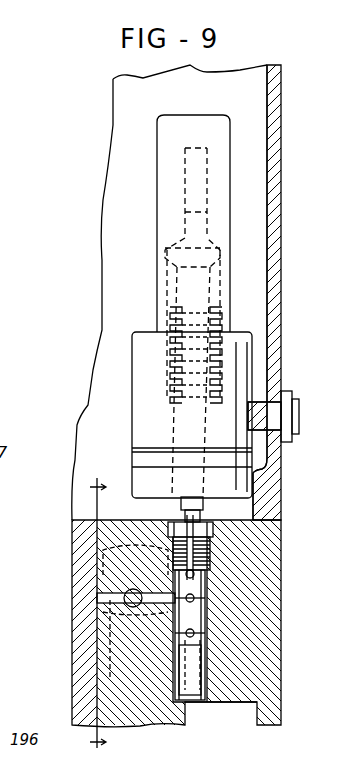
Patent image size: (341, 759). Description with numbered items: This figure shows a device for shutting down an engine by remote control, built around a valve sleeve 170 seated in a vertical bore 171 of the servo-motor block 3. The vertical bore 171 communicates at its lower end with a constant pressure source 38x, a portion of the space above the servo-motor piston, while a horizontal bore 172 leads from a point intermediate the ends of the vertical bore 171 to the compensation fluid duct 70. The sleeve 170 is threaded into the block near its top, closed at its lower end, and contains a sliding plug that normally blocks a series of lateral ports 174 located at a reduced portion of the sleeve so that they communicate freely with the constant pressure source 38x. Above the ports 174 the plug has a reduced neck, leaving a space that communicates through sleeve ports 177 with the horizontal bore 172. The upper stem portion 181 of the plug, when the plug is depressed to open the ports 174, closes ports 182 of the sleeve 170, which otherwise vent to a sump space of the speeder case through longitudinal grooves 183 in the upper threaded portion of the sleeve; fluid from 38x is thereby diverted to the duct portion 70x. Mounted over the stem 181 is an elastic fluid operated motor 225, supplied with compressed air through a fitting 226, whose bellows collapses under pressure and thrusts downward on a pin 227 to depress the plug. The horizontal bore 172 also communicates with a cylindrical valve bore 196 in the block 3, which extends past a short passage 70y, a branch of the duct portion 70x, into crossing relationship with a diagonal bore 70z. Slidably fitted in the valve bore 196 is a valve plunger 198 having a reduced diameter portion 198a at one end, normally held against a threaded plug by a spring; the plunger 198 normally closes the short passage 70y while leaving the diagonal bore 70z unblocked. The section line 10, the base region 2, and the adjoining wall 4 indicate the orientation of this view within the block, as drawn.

The base 2 is at (72, 650).
The servo-motor block 3 is at (72, 554).
The wall 4 is at (271, 229).
The section line 10 is at (109, 615).
The constant pressure source 38x is at (228, 714).
The compensation fluid duct 70 is at (72, 690).
The compensation fluid duct portion 70x is at (97, 604).
The short passage 70y is at (110, 580).
The diagonal bore 70z is at (72, 566).
The valve sleeve 170 is at (207, 648).
The vertical bore 171 is at (175, 676).
The horizontal bore 172 is at (152, 645).
The lateral ports 174 is at (207, 632).
The sleeve ports 177 is at (207, 596).
The stem portion 181 is at (160, 503).
The ports 182 is at (207, 574).
The longitudinal grooves 183 is at (210, 543).
The cylindrical valve bore 196 is at (138, 607).
The valve plunger 198 is at (72, 535).
The reduced diameter portion 198a is at (72, 620).
The elastic fluid operated motor 225 is at (140, 395).
The fitting 226 is at (237, 412).
The pin 227 is at (187, 496).